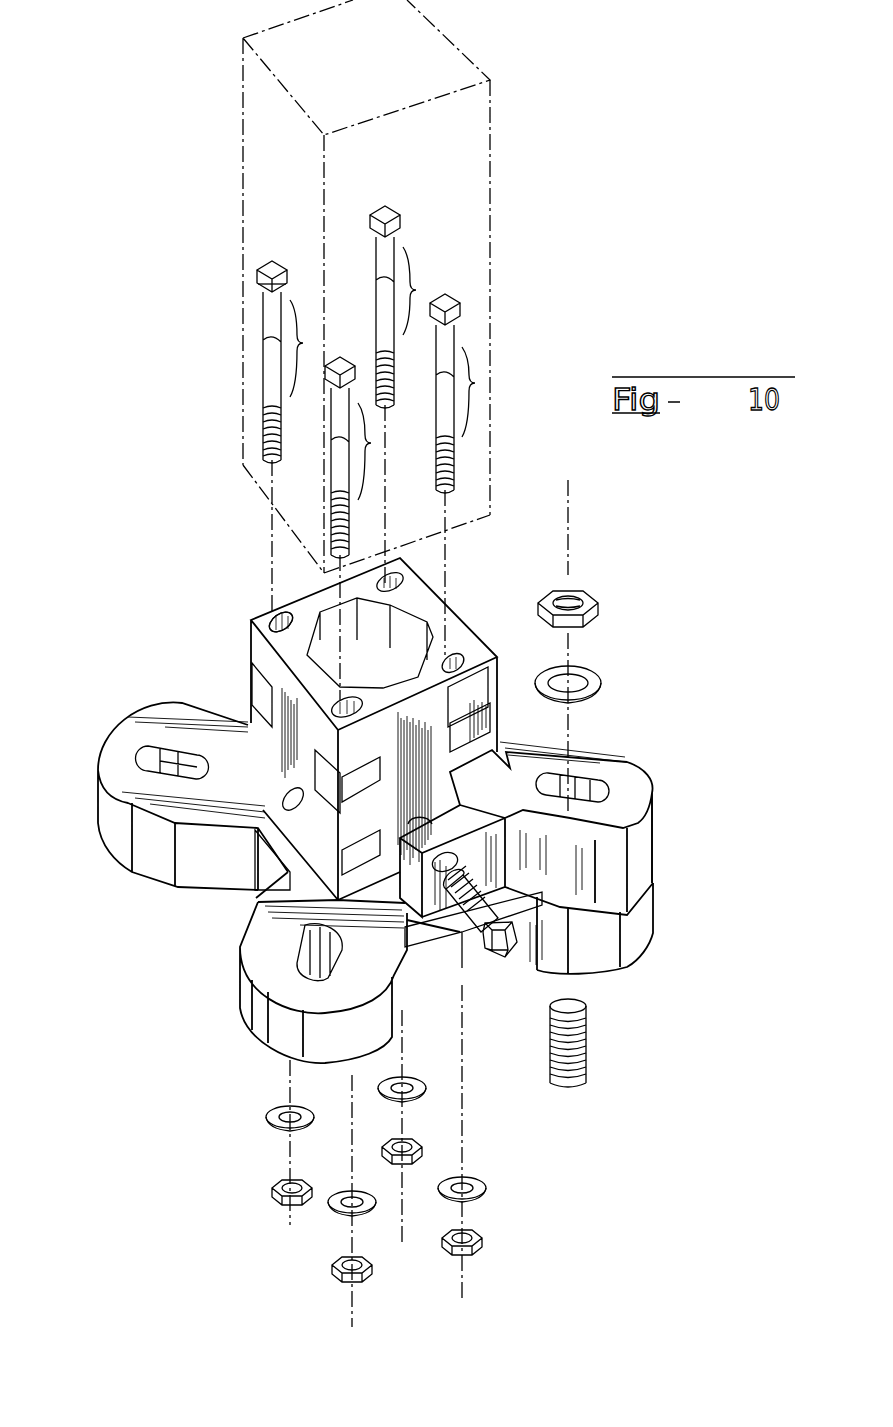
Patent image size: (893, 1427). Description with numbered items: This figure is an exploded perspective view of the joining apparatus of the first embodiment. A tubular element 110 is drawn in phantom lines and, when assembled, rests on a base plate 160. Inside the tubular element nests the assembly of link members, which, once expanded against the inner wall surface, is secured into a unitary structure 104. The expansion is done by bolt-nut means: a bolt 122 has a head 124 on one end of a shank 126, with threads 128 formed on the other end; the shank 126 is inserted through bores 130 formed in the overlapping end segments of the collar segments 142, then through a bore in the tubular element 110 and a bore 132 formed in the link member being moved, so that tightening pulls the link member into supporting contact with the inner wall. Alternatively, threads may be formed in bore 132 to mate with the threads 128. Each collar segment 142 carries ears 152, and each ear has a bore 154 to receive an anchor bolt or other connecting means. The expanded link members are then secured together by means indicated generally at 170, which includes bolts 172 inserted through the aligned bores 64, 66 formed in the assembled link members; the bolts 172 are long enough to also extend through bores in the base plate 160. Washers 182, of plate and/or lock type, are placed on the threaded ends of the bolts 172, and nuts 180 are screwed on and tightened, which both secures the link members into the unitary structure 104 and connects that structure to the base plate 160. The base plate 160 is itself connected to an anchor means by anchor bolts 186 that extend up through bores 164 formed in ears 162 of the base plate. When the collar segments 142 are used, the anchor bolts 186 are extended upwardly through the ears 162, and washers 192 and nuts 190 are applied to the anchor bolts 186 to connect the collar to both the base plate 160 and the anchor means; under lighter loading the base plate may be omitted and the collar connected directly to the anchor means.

The tubular element 110 is at (243, 78).
The securing means 170 is at (300, 216).
The bolts 172 is at (266, 274).
The bores 64 is at (277, 614).
The bores 66 is at (281, 622).
The unitary structure 104 is at (250, 650).
The bore 132 is at (418, 824).
The base plate 160 is at (377, 866).
The ears 162 is at (97, 812).
The bores 164 is at (165, 750).
The threads 128 is at (339, 952).
The collar segments 142 is at (575, 853).
The bore 154 is at (600, 768).
The ears 152 is at (653, 830).
The bores 130 is at (452, 862).
The shank 126 is at (458, 930).
The bolt 122 is at (518, 1082).
The head 124 is at (512, 960).
The anchor bolts 186 is at (602, 1075).
The nuts 190 is at (599, 605).
The washers 192 is at (601, 685).
The washers 182 is at (342, 1195).
The nuts 180 is at (340, 1270).